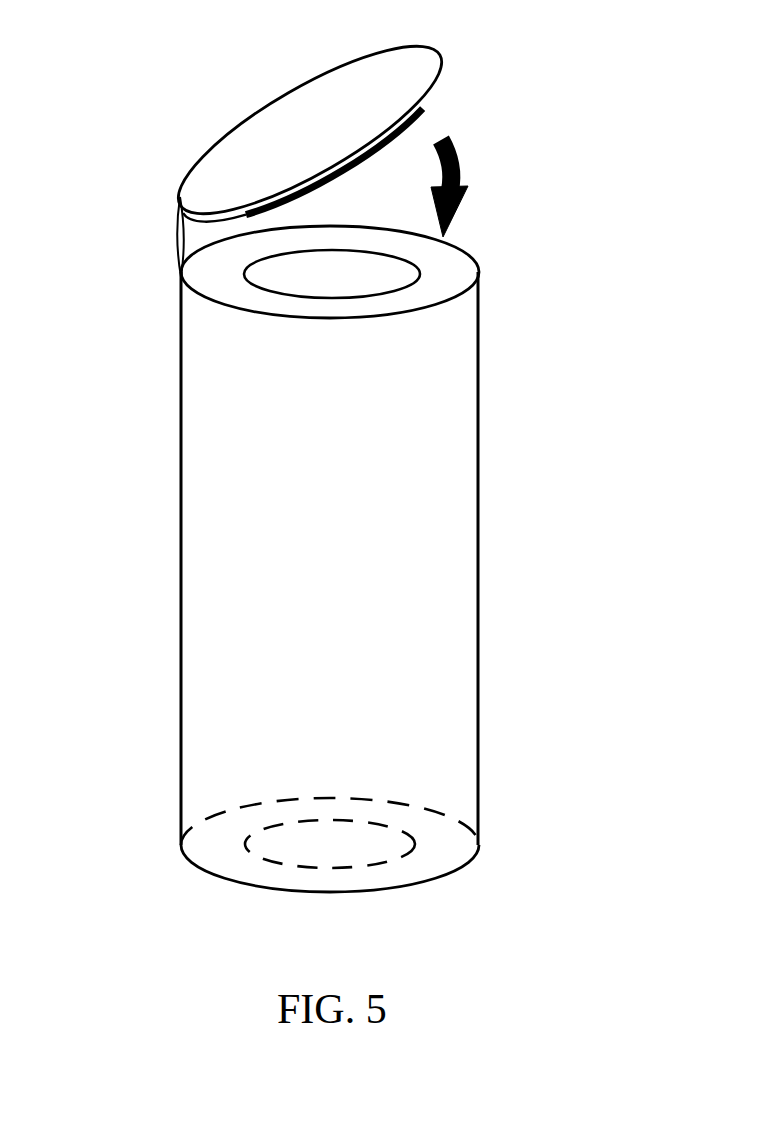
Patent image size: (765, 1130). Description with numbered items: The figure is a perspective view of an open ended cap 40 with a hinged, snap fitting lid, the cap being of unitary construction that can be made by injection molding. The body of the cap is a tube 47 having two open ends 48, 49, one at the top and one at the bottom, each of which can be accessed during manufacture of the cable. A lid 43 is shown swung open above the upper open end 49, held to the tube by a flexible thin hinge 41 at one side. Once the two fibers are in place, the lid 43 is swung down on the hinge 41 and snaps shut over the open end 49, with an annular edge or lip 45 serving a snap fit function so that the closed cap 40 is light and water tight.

The open ended cap 40 is at (600, 412).
The flexible thin hinge 41 is at (173, 241).
The lid 43 is at (348, 90).
The annular edge or lip 45 is at (420, 118).
The tube 47 is at (480, 512).
The open end 48 is at (405, 851).
The open end 49 is at (430, 275).